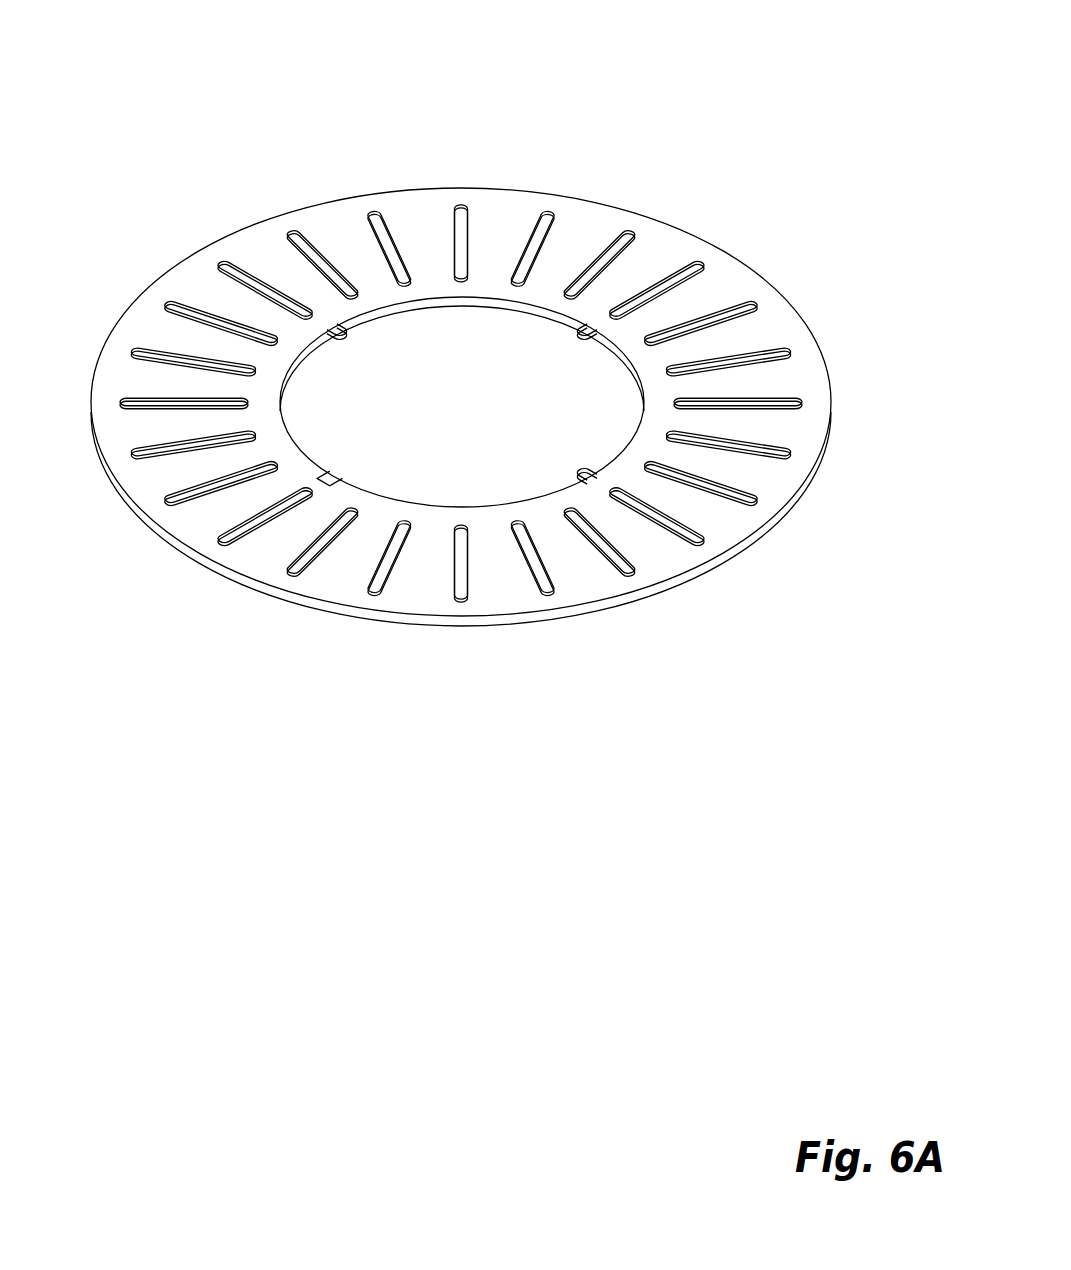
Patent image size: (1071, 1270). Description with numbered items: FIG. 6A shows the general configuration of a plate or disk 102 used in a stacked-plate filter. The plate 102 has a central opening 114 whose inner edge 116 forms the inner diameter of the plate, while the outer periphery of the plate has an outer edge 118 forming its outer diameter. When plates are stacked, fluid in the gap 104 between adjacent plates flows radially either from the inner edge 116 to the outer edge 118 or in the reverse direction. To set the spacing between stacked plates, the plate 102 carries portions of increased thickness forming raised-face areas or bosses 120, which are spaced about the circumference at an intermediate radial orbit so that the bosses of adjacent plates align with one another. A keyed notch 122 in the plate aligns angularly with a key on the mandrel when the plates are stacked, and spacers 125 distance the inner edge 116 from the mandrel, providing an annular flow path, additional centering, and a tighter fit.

The plate 102 is at (343, 162).
The gap 104 is at (153, 382).
The central opening 114 is at (462, 402).
The inner edge 116 is at (523, 307).
The outer edge 118 is at (717, 248).
The boss 120 is at (787, 352).
The keyed notch 122 is at (322, 484).
The spacers 125 is at (327, 333).